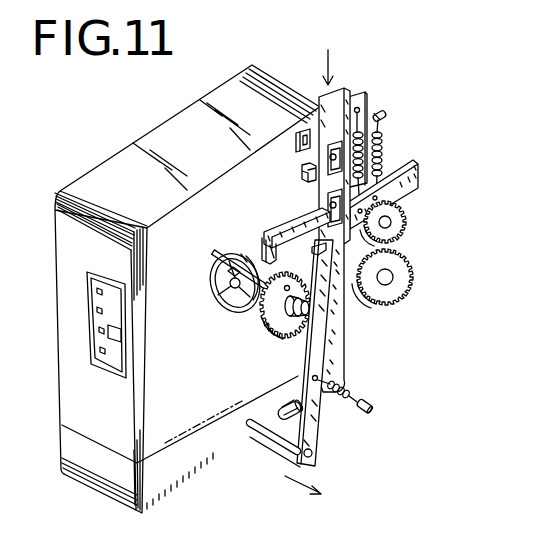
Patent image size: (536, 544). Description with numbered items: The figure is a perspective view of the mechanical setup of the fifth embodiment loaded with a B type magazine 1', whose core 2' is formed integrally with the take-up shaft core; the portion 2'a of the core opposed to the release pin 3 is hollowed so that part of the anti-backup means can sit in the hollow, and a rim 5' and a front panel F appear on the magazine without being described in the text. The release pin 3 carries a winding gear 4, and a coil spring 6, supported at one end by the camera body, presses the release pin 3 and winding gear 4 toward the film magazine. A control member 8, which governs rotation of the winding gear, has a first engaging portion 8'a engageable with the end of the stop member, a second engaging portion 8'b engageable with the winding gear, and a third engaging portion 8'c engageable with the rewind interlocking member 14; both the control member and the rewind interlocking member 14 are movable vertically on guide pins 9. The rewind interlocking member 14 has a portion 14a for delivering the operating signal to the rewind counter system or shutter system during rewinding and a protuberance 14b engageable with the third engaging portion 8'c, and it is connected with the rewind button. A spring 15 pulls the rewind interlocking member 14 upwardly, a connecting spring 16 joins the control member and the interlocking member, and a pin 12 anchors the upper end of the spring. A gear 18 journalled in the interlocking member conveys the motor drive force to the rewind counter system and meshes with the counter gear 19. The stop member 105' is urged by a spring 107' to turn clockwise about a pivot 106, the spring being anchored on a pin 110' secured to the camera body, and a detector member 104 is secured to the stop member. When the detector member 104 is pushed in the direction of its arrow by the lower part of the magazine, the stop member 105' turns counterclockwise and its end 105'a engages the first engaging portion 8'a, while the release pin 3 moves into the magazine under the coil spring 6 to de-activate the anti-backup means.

The B type magazine 1' is at (187, 289).
The front panel F is at (98, 318).
The rewind interlocking member 14 is at (347, 90).
The portion 14a is at (394, 195).
The protuberance 14b is at (302, 168).
The guide pins 9 is at (333, 152).
The connecting spring 16 is at (360, 108).
The spring 15 is at (382, 150).
The pin 12 is at (386, 115).
The bracket 8 is at (297, 216).
The first engaging portion 8'a is at (306, 261).
The second engaging portion 8'b is at (258, 230).
The third engaging portion 8'c is at (290, 121).
The core 2' is at (220, 283).
The portion 2'a is at (205, 266).
The wheel rim 5' is at (232, 236).
The release pin 3 is at (276, 357).
The winding gear 4 is at (283, 348).
The coil spring 6 is at (305, 348).
The gear 18 is at (400, 219).
The counter gear 19 is at (400, 262).
The stop member 105' is at (351, 353).
The end 105'a is at (362, 318).
The pivot 106 is at (278, 415).
The spring 107' is at (344, 414).
The pin 110' is at (392, 398).
The detector member 104 is at (280, 448).